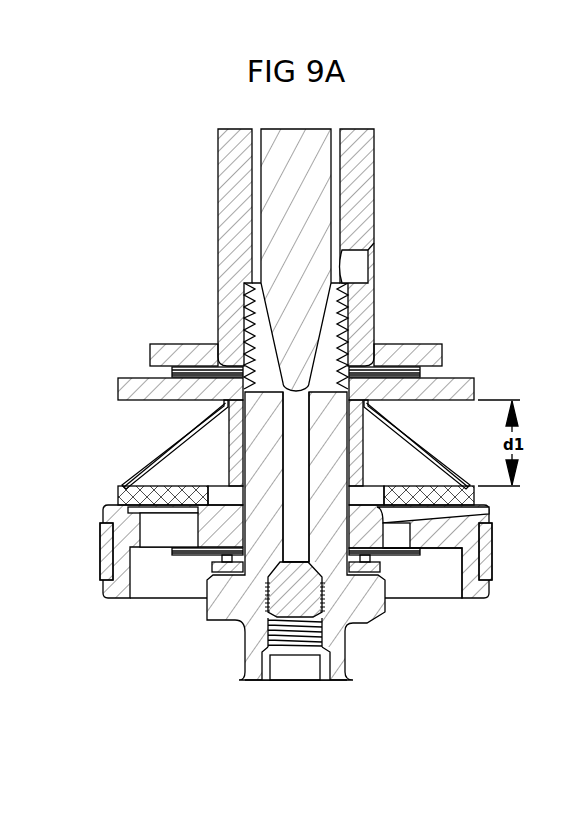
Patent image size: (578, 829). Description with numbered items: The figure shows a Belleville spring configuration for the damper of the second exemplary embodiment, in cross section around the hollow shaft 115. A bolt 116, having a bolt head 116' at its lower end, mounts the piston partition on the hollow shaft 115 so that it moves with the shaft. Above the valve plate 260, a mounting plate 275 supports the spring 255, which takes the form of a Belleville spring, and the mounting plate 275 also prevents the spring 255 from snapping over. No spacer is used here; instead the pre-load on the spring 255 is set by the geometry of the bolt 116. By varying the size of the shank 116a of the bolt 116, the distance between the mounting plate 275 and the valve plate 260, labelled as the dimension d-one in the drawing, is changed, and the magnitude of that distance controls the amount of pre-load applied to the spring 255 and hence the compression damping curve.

The hollow shaft 115 is at (233, 205).
The mounting plate 275 is at (455, 385).
The spring 255 is at (160, 448).
The bolt 116 is at (241, 536).
The bolt head 116' is at (343, 630).
The shank 116a is at (332, 520).
The valve plate 260 is at (425, 498).